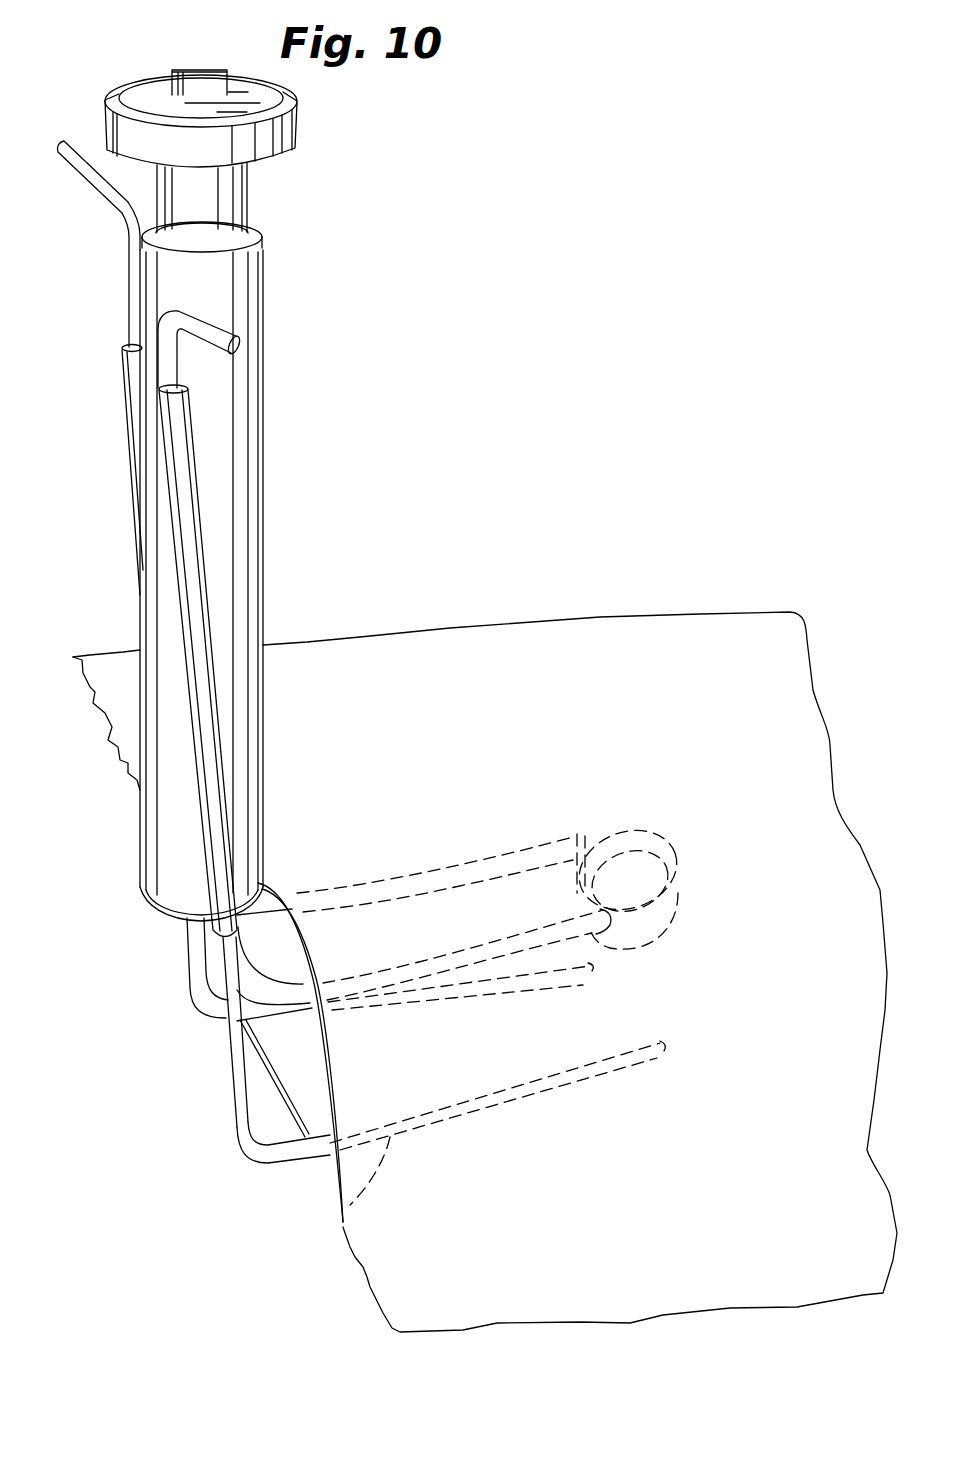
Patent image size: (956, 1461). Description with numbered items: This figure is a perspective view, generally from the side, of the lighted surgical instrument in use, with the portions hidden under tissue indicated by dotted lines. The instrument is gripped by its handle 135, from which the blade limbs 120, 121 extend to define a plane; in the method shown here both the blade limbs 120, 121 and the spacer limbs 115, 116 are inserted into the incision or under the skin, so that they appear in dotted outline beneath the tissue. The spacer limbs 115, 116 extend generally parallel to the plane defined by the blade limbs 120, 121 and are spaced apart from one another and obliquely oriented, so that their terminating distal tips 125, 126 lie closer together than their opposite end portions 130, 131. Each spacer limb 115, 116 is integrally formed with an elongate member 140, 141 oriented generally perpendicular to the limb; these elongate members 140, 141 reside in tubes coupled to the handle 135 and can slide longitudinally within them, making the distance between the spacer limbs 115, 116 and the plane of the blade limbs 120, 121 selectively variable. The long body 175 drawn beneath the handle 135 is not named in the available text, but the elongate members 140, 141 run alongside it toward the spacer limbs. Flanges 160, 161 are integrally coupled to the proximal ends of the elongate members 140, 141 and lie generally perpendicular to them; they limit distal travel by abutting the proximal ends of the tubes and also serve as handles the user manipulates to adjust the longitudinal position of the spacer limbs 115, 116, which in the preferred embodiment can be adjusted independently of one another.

The handle 135 is at (240, 183).
The flange 160 is at (72, 163).
The flange 161 is at (203, 323).
The housing body 175 is at (262, 477).
The elongate member 140 is at (190, 960).
The end portion 130 is at (203, 1010).
The spacer limb 115 is at (443, 997).
The elongate member 141 is at (227, 1100).
The end portion 131 is at (240, 1153).
The spacer limb 116 is at (340, 1220).
The blade limb 120 is at (443, 867).
The blade limb 121 is at (607, 943).
The distal tip 125 is at (600, 968).
The distal tip 126 is at (680, 1045).